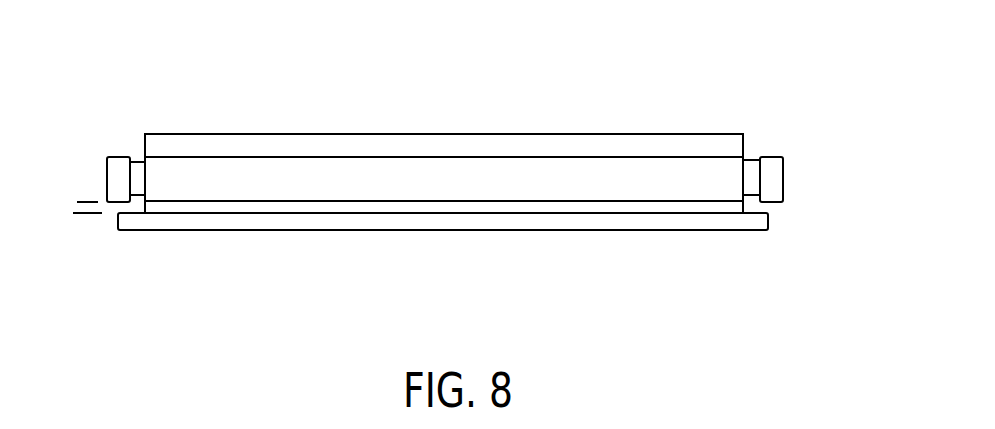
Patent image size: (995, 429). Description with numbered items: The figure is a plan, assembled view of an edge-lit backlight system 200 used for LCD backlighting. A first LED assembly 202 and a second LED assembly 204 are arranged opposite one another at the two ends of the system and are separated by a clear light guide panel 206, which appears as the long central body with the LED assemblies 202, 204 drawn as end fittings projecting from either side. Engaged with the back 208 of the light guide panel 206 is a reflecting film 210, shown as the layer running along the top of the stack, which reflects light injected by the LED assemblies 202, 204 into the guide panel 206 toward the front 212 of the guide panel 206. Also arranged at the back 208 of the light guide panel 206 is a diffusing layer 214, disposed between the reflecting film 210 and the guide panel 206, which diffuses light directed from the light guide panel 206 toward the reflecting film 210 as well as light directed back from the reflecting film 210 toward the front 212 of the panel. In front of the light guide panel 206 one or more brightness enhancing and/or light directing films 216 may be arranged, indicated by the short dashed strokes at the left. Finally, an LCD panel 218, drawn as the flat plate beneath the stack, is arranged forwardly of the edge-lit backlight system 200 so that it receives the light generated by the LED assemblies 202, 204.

The edge-lit backlight system 200 is at (690, 80).
The first LED assembly 202 is at (803, 163).
The second LED assembly 204 is at (95, 175).
The light guide panel 206 is at (468, 189).
The back of the light guide panel 208 is at (687, 155).
The reflector film backing 210 is at (370, 132).
The front of the light guide panel 212 is at (615, 200).
The diffusing layer 214 is at (453, 155).
The brightness enhancing and/or light directing films 216 is at (78, 209).
The LCD panel 218 is at (705, 235).